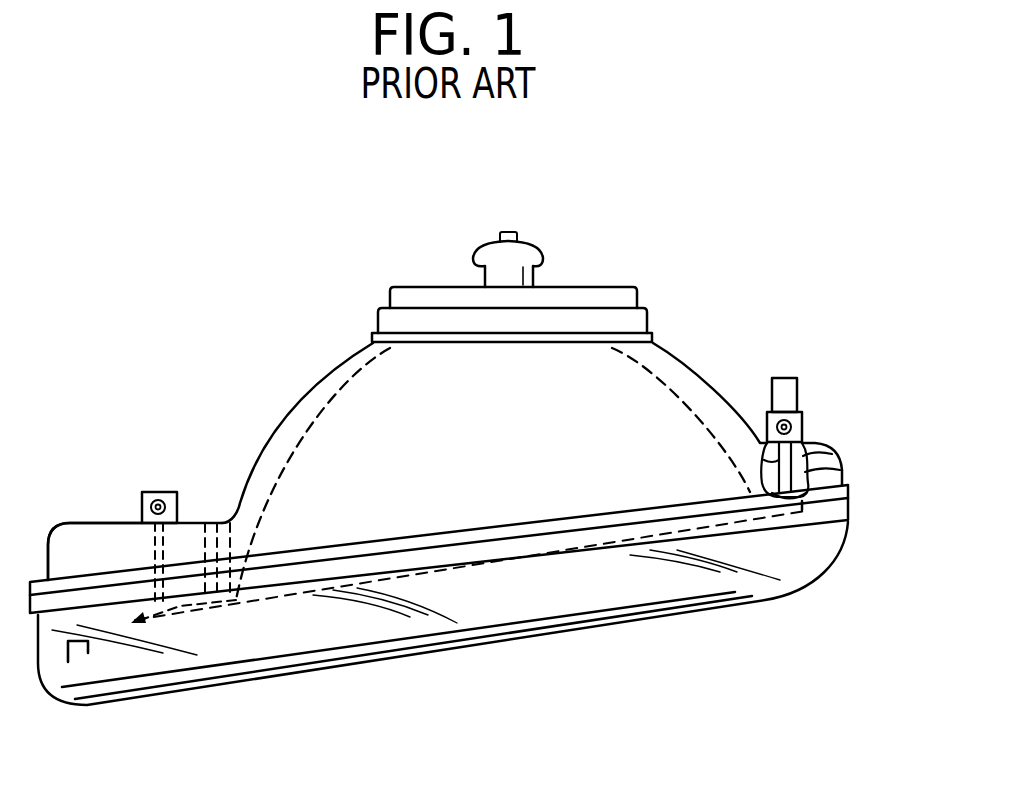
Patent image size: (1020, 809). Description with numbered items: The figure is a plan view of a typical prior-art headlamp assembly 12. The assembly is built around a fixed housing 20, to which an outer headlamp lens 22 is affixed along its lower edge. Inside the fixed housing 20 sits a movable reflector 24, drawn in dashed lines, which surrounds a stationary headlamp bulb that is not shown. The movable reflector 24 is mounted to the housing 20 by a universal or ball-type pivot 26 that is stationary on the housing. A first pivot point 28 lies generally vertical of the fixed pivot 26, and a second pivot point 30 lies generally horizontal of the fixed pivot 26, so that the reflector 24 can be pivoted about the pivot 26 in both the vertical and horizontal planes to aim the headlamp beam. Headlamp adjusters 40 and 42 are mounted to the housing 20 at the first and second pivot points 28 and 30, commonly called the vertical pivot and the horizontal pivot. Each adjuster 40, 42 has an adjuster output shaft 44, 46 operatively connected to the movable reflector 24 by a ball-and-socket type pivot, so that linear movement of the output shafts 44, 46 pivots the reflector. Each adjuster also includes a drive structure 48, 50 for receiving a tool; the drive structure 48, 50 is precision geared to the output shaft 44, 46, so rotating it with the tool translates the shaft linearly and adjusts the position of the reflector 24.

The headlamp assembly 12 is at (363, 272).
The fixed housing 20 is at (268, 444).
The outer headlamp lens 22 is at (670, 613).
The movable reflector 24 is at (356, 375).
The pivot 26 is at (226, 518).
The first pivot point 28 is at (125, 618).
The second pivot point 30 is at (850, 491).
The headlamp adjuster 40 is at (163, 494).
The headlamp adjuster 42 is at (806, 423).
The adjuster output shaft 44 is at (150, 553).
The adjuster output shaft 46 is at (840, 470).
The drive structure 48 is at (146, 499).
The drive structure 50 is at (768, 412).